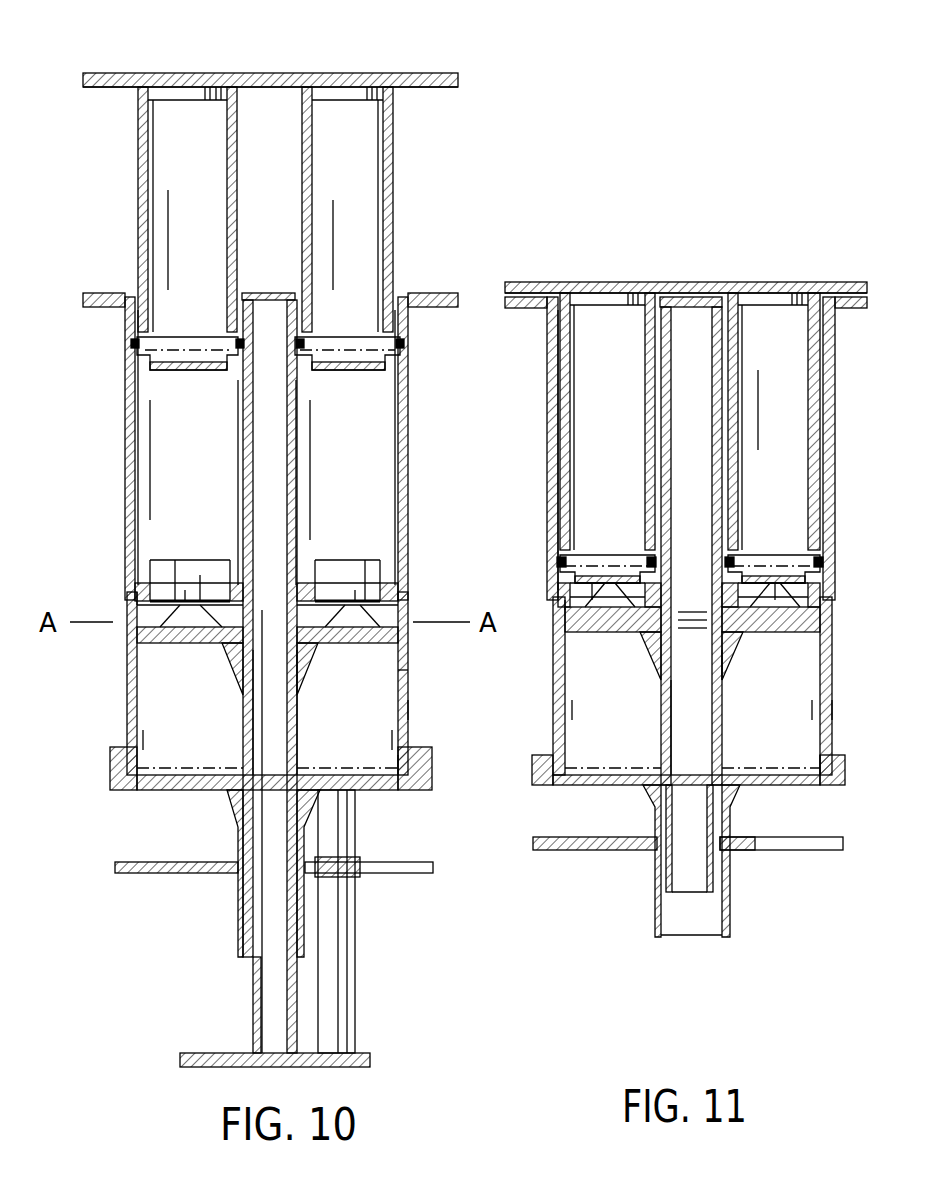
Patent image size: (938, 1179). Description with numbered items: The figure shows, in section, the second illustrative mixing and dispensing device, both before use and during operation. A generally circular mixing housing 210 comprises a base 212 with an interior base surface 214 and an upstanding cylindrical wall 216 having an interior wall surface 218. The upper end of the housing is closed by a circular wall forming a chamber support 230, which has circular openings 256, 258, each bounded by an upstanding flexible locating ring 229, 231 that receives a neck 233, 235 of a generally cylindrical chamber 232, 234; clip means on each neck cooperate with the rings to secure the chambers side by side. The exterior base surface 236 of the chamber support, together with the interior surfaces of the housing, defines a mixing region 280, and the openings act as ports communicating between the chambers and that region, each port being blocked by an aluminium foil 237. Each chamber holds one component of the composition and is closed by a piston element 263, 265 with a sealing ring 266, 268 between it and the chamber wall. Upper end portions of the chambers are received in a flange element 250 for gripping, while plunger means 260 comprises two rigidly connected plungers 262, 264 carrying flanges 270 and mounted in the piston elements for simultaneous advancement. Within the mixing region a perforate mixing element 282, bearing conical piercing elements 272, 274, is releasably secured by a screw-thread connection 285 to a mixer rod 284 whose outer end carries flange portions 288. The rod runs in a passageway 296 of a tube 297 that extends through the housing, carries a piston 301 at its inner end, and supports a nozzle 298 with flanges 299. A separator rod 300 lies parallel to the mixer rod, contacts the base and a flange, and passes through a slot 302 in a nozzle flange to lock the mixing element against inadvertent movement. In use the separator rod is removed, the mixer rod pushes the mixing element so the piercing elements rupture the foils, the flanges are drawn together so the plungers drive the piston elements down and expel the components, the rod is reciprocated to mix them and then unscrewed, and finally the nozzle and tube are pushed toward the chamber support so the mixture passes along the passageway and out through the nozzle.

In FIG. 10, the mixing housing 210 is at (125, 684).
In FIG. 11, the mixing housing 210 is at (535, 750).
In FIG. 10, the base 212 is at (405, 790).
In FIG. 11, the base 212 is at (775, 785).
In FIG. 10, the interior base surface 214 is at (410, 752).
In FIG. 11, the interior base surface 214 is at (773, 757).
In FIG. 10, the cylindrical wall 216 is at (410, 712).
In FIG. 11, the cylindrical wall 216 is at (830, 712).
In FIG. 10, the interior wall surface 218 is at (396, 728).
In FIG. 11, the interior wall surface 218 is at (820, 710).
In FIG. 10, the ring 229 is at (137, 582).
In FIG. 11, the ring 229 is at (708, 590).
In FIG. 11, the chamber support 230 is at (735, 662).
In FIG. 10, the ring 231 is at (292, 585).
In FIG. 11, the ring 231 is at (822, 585).
In FIG. 10, the chamber 232 is at (170, 447).
In FIG. 11, the chamber 232 is at (550, 375).
In FIG. 10, the neck 233 is at (135, 598).
In FIG. 11, the neck 233 is at (560, 598).
In FIG. 10, the chamber 234 is at (402, 452).
In FIG. 11, the chamber 234 is at (830, 405).
In FIG. 10, the neck 235 is at (406, 598).
In FIG. 11, the neck 235 is at (822, 612).
In FIG. 10, the exterior base surface 236 is at (181, 717).
In FIG. 11, the exterior base surface 236 is at (603, 697).
In FIG. 10, the foils 237 is at (193, 597).
In FIG. 10, the flange element 250 is at (124, 299).
In FIG. 11, the flange element 250 is at (842, 308).
In FIG. 10, the opening 256 is at (190, 708).
In FIG. 11, the opening 256 is at (613, 703).
In FIG. 10, the opening 258 is at (347, 726).
In FIG. 11, the opening 258 is at (771, 703).
In FIG. 10, the plunger means 260 is at (373, 70).
In FIG. 11, the plunger means 260 is at (752, 280).
In FIG. 10, the plunger 262 is at (136, 173).
In FIG. 11, the plunger 262 is at (565, 340).
In FIG. 10, the piston element 263 is at (131, 318).
In FIG. 11, the piston element 263 is at (558, 415).
In FIG. 10, the plunger 264 is at (400, 182).
In FIG. 11, the plunger 264 is at (818, 372).
In FIG. 10, the piston element 265 is at (398, 332).
In FIG. 11, the piston element 265 is at (815, 548).
In FIG. 10, the sealing ring 266 is at (134, 346).
In FIG. 11, the sealing ring 266 is at (548, 580).
In FIG. 10, the sealing ring 268 is at (403, 356).
In FIG. 11, the sealing ring 268 is at (822, 565).
In FIG. 10, the flanges 270 is at (428, 90).
In FIG. 11, the flanges 270 is at (836, 284).
In FIG. 10, the piercing element 272 is at (186, 598).
In FIG. 11, the piercing element 272 is at (652, 540).
In FIG. 10, the piercing element 274 is at (372, 590).
In FIG. 11, the piercing element 274 is at (772, 590).
In FIG. 10, the mixing region 280 is at (137, 718).
In FIG. 11, the mixing region 280 is at (625, 740).
In FIG. 10, the perforate mixing element 282 is at (398, 635).
In FIG. 11, the perforate mixing element 282 is at (822, 633).
In FIG. 10, the mixer rod 284 is at (270, 972).
In FIG. 10, the screw-thread connection 285 is at (302, 652).
In FIG. 10, the flange portions 288 is at (215, 1053).
In FIG. 11, the passageway 296 is at (700, 893).
In FIG. 10, the tube 297 is at (243, 738).
In FIG. 11, the tube 297 is at (663, 748).
In FIG. 10, the nozzle 298 is at (240, 925).
In FIG. 11, the nozzle 298 is at (655, 915).
In FIG. 10, the flanges 299 is at (125, 866).
In FIG. 11, the flanges 299 is at (590, 850).
In FIG. 10, the separator rod 300 is at (342, 965).
In FIG. 10, the piston 301 is at (400, 675).
In FIG. 10, the slot 302 is at (362, 866).
In FIG. 11, the slot 302 is at (810, 852).